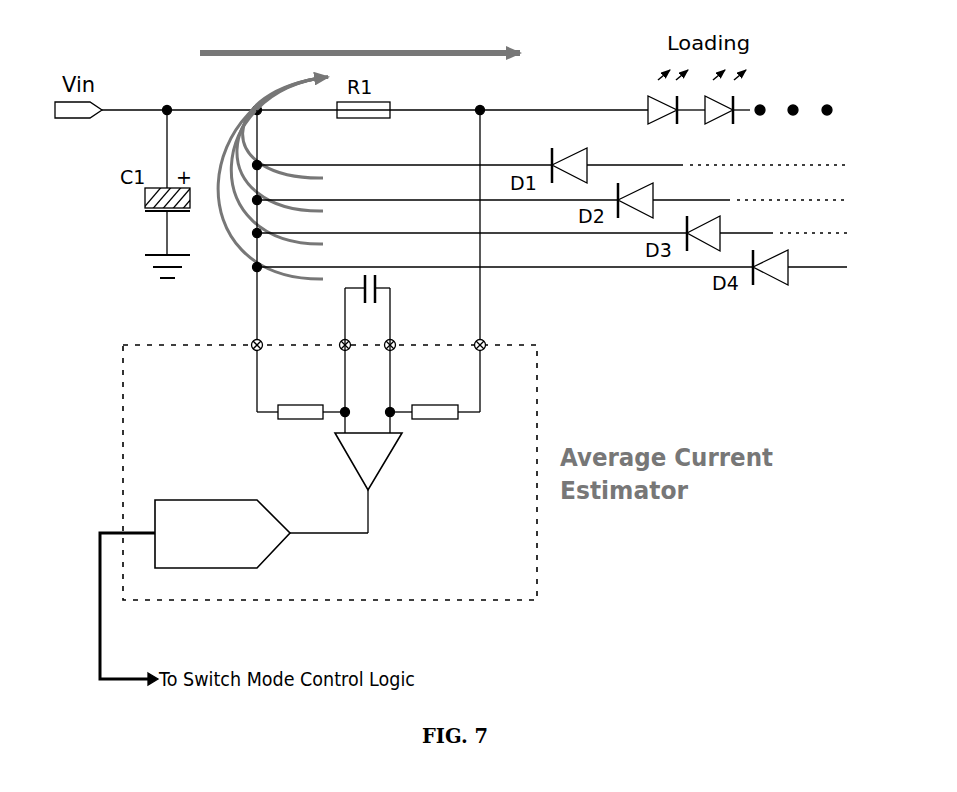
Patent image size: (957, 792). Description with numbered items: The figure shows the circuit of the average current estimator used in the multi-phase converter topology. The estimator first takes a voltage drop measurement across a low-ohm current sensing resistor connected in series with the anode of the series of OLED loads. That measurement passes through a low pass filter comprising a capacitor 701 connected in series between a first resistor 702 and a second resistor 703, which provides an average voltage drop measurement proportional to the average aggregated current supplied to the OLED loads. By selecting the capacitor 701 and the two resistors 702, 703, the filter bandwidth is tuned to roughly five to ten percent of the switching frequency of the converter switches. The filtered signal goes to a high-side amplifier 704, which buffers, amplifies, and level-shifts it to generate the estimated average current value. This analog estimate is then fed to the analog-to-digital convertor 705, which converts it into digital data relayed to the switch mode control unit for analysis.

The capacitor C2 701 is at (360, 299).
The resistor R2 702 is at (437, 423).
The resistor R3 703 is at (296, 421).
The high-side amplifier U1 704 is at (394, 466).
The analog-to-digital convertor (ADC) 705 is at (280, 556).